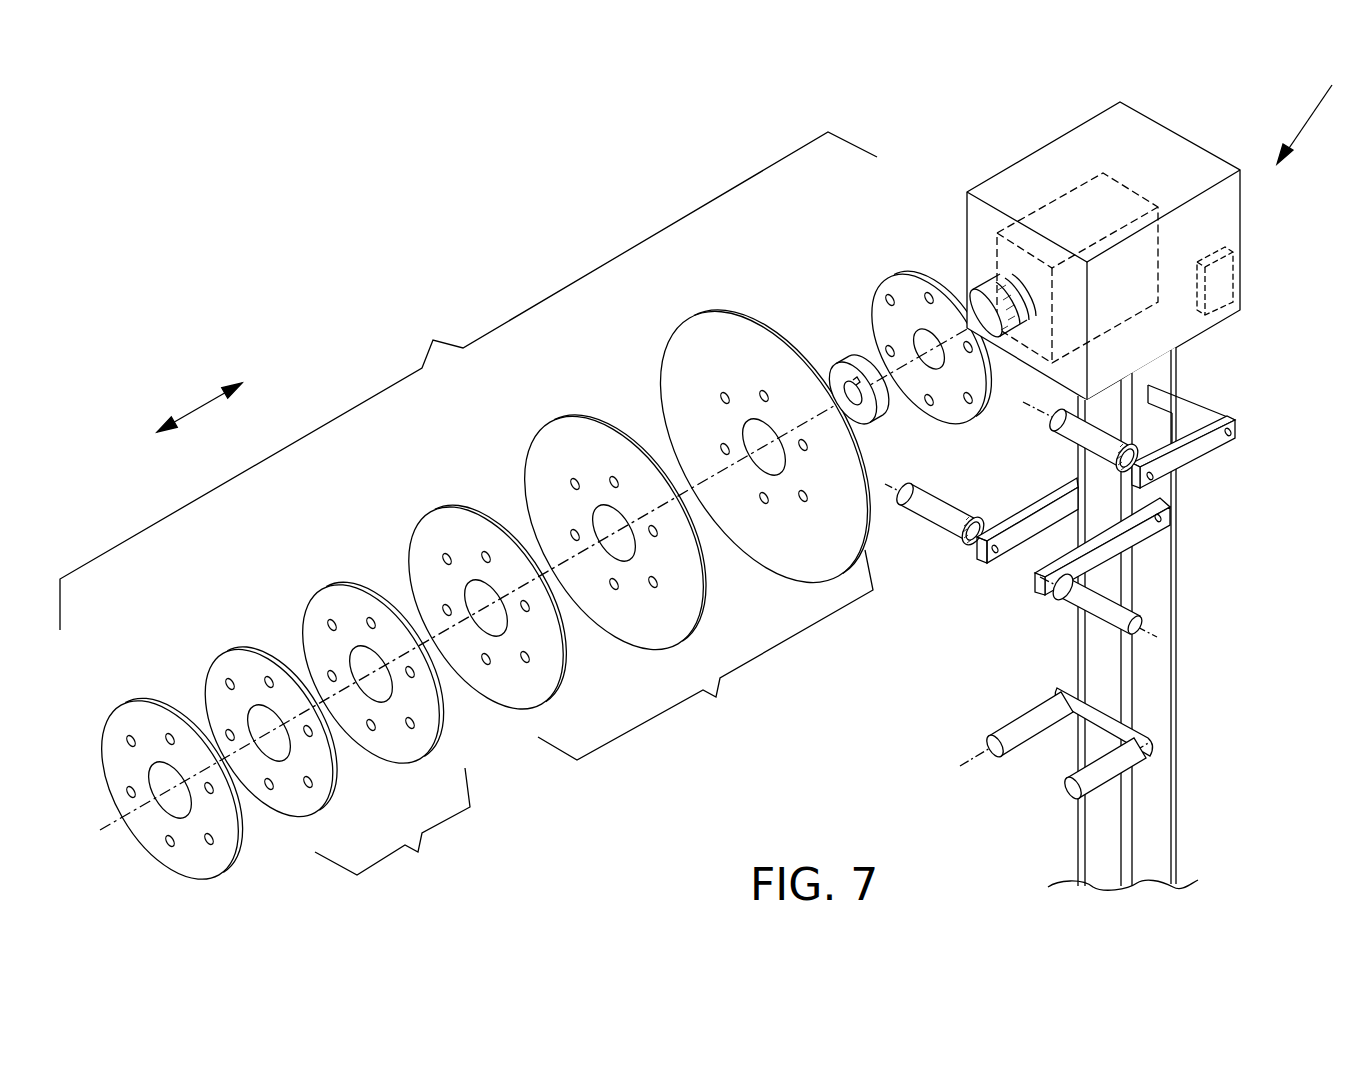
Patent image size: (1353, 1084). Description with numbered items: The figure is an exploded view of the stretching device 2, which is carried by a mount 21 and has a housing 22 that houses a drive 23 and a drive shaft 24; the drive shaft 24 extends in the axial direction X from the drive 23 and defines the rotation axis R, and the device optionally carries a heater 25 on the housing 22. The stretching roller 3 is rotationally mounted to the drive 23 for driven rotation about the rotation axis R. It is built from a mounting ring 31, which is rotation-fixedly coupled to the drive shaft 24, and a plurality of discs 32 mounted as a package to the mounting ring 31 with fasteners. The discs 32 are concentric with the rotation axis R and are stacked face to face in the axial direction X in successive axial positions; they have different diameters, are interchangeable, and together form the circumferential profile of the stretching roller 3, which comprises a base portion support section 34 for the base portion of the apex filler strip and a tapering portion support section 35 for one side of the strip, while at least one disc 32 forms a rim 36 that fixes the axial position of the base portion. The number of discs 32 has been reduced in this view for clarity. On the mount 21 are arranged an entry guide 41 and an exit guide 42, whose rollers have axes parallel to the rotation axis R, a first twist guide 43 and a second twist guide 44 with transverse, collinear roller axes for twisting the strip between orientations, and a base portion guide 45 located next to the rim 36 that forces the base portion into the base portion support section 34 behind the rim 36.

The stretching device 2 is at (1311, 121).
The stretching roller 3 is at (468, 381).
The mount 21 is at (1150, 697).
The housing 22 is at (1199, 138).
The drive 23 is at (1065, 218).
The drive shaft 24 is at (987, 313).
The heater 25 is at (1222, 280).
The mounting ring 31 is at (905, 293).
The discs 32 is at (577, 440).
The base portion support section 34 is at (392, 826).
The tapering portion support section 35 is at (705, 655).
The rim 36 is at (168, 850).
The entry guide 41 is at (1070, 795).
The exit guide 42 is at (988, 746).
The first twist guide 43 is at (1083, 612).
The second twist guide 44 is at (925, 513).
The base portion guide 45 is at (1120, 447).
The rotation axis R is at (540, 579).
The axial direction X is at (199, 404).